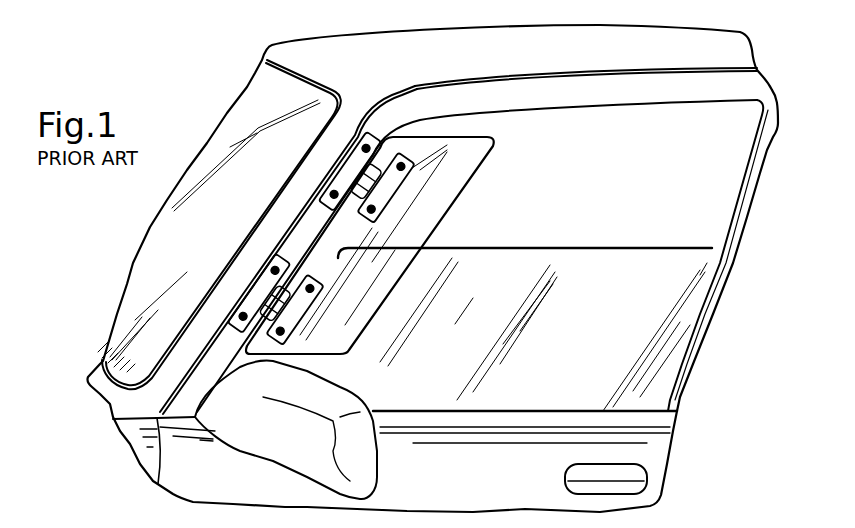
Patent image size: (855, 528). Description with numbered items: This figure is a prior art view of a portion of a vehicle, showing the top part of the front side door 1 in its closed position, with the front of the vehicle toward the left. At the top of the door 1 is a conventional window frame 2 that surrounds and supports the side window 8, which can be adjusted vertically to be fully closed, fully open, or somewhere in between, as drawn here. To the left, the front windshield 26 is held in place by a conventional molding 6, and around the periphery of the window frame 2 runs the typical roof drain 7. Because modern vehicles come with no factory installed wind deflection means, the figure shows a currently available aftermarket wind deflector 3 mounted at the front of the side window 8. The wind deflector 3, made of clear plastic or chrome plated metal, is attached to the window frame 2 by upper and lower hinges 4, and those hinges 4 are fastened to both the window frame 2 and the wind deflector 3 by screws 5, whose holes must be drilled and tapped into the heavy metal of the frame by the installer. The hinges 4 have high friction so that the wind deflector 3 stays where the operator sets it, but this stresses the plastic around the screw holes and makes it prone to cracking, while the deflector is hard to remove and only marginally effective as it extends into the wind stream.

The front side door 1 is at (663, 452).
The window frame 2 is at (400, 98).
The wind deflector 3 is at (503, 138).
The hinges 4 is at (350, 175).
The screws 5 is at (337, 193).
The molding 6 is at (195, 307).
The roof drain 7 is at (550, 70).
The window 8 is at (542, 248).
The front windshield 26 is at (257, 88).